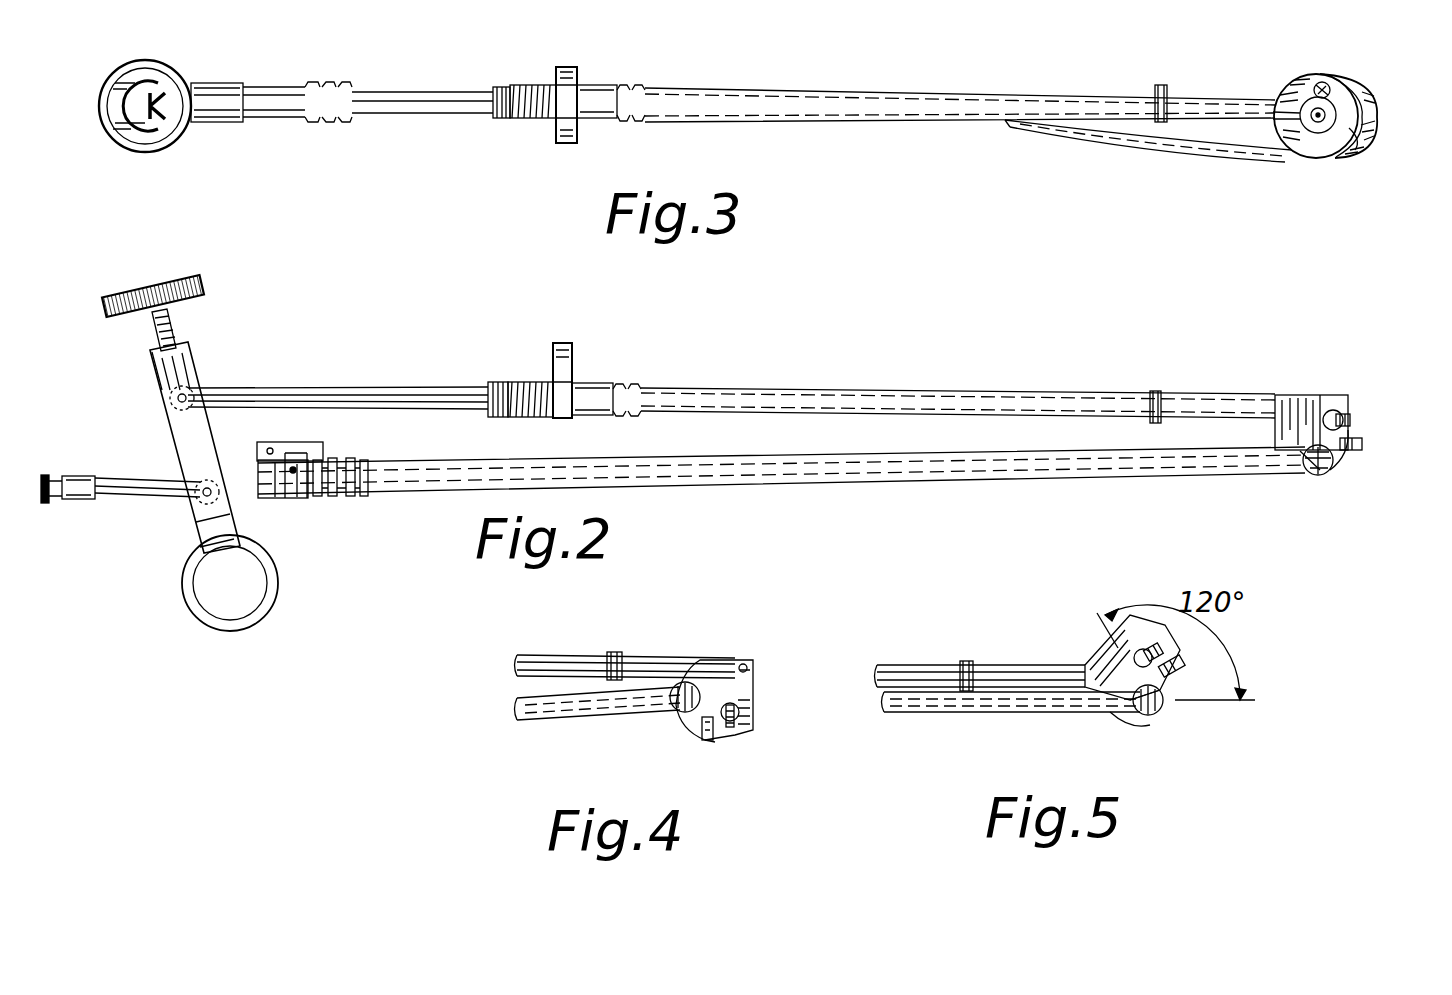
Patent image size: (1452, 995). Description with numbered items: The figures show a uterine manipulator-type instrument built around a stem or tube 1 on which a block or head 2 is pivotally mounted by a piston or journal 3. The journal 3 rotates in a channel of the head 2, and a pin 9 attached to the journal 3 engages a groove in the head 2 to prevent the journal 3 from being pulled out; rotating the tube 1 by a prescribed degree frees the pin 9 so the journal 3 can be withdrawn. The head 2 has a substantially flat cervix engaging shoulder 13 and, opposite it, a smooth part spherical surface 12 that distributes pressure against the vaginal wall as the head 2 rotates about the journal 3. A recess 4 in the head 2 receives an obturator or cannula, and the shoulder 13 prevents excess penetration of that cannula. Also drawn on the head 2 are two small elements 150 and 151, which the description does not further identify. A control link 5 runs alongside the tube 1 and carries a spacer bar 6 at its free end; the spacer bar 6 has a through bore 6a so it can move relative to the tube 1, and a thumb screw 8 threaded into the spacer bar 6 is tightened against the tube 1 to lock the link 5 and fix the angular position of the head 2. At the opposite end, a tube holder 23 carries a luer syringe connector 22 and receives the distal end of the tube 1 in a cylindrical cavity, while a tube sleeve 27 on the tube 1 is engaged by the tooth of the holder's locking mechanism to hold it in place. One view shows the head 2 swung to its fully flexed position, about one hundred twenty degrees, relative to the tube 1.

In FIG. 3, the tube 1 is at (1188, 150).
In FIG. 2, the tube 1 is at (840, 482).
In FIG. 4, the tube 1 is at (585, 715).
In FIG. 5, the tube 1 is at (970, 713).
In FIG. 3, the head 2 is at (1390, 127).
In FIG. 2, the head 2 is at (1357, 473).
In FIG. 4, the head 2 is at (732, 760).
In FIG. 5, the head 2 is at (1174, 727).
In FIG. 2, the journal 3 is at (1315, 475).
In FIG. 4, the journal 3 is at (680, 712).
In FIG. 5, the journal 3 is at (1142, 716).
In FIG. 3, the recess 4 is at (1320, 125).
In FIG. 2, the control link 5 is at (346, 388).
In FIG. 2, the spacer bar 6 is at (172, 436).
In FIG. 2, the through bore 6a is at (190, 394).
In FIG. 3, the thumb screw 8 is at (152, 152).
In FIG. 2, the thumb screw 8 is at (190, 268).
In FIG. 3, the pin 9 is at (1296, 95).
In FIG. 4, the pin 9 is at (750, 664).
In FIG. 5, the part spherical surface 12 is at (1125, 718).
In FIG. 2, the shoulder 13 is at (1340, 400).
In FIG. 2, the luer syringe connector 22 is at (93, 492).
In FIG. 2, the tube holder 23 is at (281, 498).
In FIG. 2, the tube sleeve 27 is at (345, 495).
In FIG. 3, the locking element 150 is at (1355, 150).
In FIG. 2, the locking element 150 is at (1363, 445).
In FIG. 4, the locking element 150 is at (710, 742).
In FIG. 5, the locking element 150 is at (1185, 668).
In FIG. 2, the locking screw 151 is at (1352, 418).
In FIG. 4, the locking screw 151 is at (735, 728).
In FIG. 5, the locking screw 151 is at (1160, 653).